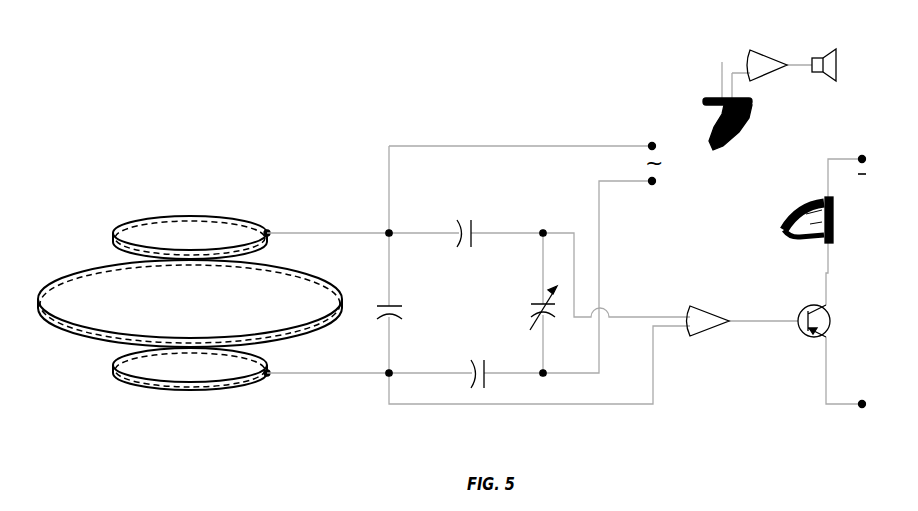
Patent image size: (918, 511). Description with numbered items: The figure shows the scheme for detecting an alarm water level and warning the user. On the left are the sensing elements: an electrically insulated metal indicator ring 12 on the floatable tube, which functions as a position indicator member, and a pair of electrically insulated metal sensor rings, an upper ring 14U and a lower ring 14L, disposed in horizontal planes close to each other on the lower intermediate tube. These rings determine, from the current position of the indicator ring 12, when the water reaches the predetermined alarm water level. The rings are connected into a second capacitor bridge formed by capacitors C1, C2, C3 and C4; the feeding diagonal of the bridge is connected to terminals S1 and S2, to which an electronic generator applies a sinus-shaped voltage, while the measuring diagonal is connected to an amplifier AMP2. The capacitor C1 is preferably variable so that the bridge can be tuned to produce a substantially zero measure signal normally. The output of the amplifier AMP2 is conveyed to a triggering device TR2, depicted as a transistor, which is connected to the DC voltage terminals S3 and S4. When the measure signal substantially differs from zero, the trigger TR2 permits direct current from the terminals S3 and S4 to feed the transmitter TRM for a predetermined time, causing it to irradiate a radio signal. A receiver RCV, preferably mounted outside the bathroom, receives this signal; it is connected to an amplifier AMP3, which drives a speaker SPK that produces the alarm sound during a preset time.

The indicator ring 12 is at (102, 342).
The upper ring 14U is at (162, 217).
The lower ring 14L is at (175, 390).
The capacitor C1 is at (530, 308).
The capacitor C2 is at (464, 246).
The capacitor C3 is at (476, 363).
The capacitor C4 is at (403, 310).
The terminal S1 is at (654, 135).
The terminal S2 is at (654, 195).
The DC voltage terminal S3 is at (862, 405).
The DC voltage terminal S4 is at (864, 153).
The amplifier AMP2 is at (716, 308).
The amplifier AMP3 is at (763, 55).
The speaker SPK is at (842, 65).
The receiver RCV is at (748, 124).
The transmitter TRM is at (786, 220).
The triggering device TR2 is at (808, 333).